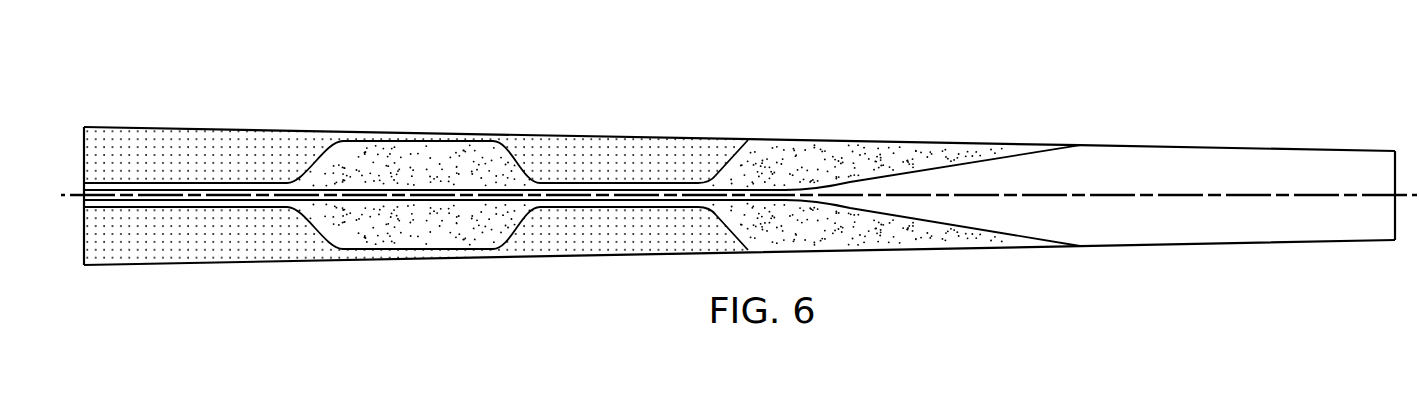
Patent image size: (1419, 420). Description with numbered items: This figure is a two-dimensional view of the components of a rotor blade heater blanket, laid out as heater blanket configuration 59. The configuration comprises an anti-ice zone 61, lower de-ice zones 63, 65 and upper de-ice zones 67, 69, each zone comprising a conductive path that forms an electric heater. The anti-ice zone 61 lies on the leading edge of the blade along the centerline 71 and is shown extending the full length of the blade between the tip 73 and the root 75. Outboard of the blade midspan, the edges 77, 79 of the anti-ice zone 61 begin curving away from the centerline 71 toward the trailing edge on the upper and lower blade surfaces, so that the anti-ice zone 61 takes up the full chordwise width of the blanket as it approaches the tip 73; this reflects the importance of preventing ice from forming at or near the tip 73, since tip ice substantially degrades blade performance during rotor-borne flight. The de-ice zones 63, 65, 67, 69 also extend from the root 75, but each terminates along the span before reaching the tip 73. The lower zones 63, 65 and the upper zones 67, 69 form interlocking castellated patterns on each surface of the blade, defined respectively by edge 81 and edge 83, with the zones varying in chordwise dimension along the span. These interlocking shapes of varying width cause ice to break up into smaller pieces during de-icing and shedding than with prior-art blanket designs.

The heater blanket configuration 59 is at (253, 116).
The anti-ice zone 61 is at (1227, 168).
The lower de-ice zone 63 is at (608, 234).
The lower de-ice zone 65 is at (413, 230).
The upper de-ice zone 67 is at (637, 166).
The upper de-ice zone 69 is at (413, 165).
The centerline 71 is at (1113, 193).
The tip 73 is at (1397, 227).
The root 75 is at (82, 245).
The edge 77 is at (898, 224).
The edge 79 is at (898, 170).
The edge 81 is at (309, 234).
The edge 83 is at (308, 165).